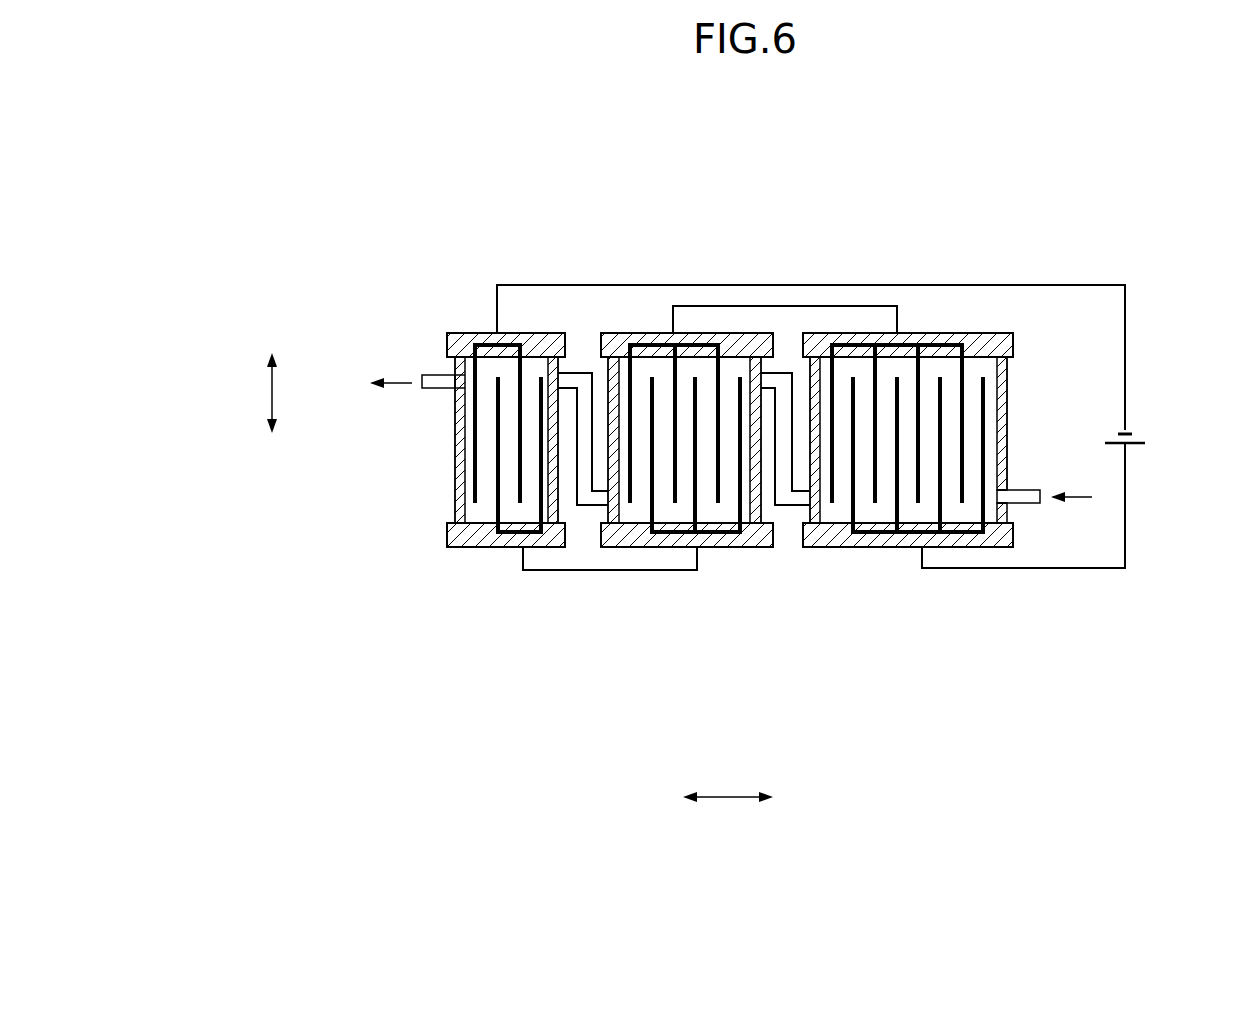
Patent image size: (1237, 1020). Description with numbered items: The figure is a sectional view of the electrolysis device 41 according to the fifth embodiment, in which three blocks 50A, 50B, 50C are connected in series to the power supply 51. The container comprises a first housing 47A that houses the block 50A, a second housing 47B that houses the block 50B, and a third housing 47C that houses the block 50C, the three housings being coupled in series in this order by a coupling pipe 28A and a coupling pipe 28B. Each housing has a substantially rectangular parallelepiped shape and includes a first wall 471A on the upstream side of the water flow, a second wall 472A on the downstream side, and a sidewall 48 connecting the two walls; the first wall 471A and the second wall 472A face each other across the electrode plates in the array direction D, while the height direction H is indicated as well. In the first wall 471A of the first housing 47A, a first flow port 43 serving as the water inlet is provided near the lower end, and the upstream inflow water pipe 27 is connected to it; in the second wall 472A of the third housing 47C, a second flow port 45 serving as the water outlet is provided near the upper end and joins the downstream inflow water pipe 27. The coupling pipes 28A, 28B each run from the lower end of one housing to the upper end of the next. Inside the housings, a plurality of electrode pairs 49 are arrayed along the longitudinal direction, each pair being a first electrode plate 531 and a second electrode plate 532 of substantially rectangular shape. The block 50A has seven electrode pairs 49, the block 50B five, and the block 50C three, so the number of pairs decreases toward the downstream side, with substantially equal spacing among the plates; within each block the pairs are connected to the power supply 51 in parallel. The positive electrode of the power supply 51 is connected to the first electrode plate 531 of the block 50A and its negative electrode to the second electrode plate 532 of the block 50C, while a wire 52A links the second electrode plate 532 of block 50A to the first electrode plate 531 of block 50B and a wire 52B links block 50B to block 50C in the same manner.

The electrolysis device 41 is at (346, 113).
The inflow water pipe 27 is at (430, 381).
The second flow port 45 is at (450, 380).
The first flow port 43 is at (1007, 500).
The electrode pair 49 is at (312, 445).
The first electrode plate 531 is at (664, 372).
The second electrode plate 532 is at (480, 340).
The first housing 47A is at (840, 318).
The second housing 47B is at (630, 318).
The third housing 47C is at (454, 318).
The sidewall 48 is at (460, 548).
The block 50A is at (973, 360).
The block 50B is at (732, 358).
The block 50C is at (530, 360).
The first wall 471A is at (562, 532).
The second wall 472A is at (573, 372).
The coupling pipe 28A is at (778, 508).
The coupling pipe 28B is at (558, 525).
The wire 52A is at (878, 306).
The wire 52B is at (548, 570).
The power supply 51 is at (1140, 461).
The height direction H is at (265, 395).
The array direction D is at (730, 800).